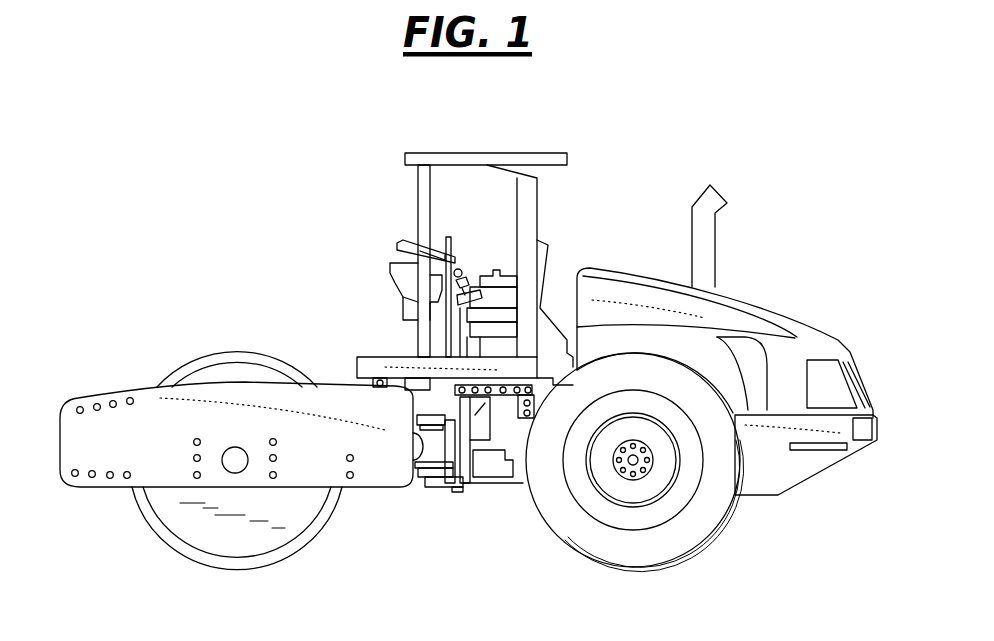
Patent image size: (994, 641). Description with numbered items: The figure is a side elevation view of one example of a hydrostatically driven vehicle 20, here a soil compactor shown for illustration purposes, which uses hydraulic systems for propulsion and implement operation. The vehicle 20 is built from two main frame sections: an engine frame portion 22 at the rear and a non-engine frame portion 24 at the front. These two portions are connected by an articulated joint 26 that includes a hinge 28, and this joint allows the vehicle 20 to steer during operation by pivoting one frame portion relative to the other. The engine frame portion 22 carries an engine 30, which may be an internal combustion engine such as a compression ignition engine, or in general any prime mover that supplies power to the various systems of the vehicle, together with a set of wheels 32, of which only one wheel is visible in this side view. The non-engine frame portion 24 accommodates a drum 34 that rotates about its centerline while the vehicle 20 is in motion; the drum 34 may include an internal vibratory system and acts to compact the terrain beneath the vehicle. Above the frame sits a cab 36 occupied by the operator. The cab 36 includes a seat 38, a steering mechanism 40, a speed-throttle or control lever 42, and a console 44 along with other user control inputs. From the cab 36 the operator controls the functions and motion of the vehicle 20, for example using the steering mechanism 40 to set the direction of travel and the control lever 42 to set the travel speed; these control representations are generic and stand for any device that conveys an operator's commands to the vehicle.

The hydrostatically driven vehicle 20 is at (230, 199).
The engine frame portion 22 is at (793, 463).
The non-engine frame portion 24 is at (375, 470).
The articulated joint 26 is at (441, 504).
The hinge 28 is at (430, 447).
The engine 30 is at (788, 322).
The set of wheels 32 is at (707, 540).
The drum 34 is at (217, 359).
The cab 36 is at (589, 129).
The seat 38 is at (503, 277).
The steering mechanism 40 is at (407, 246).
The control lever 42 is at (467, 263).
The console 44 is at (407, 340).